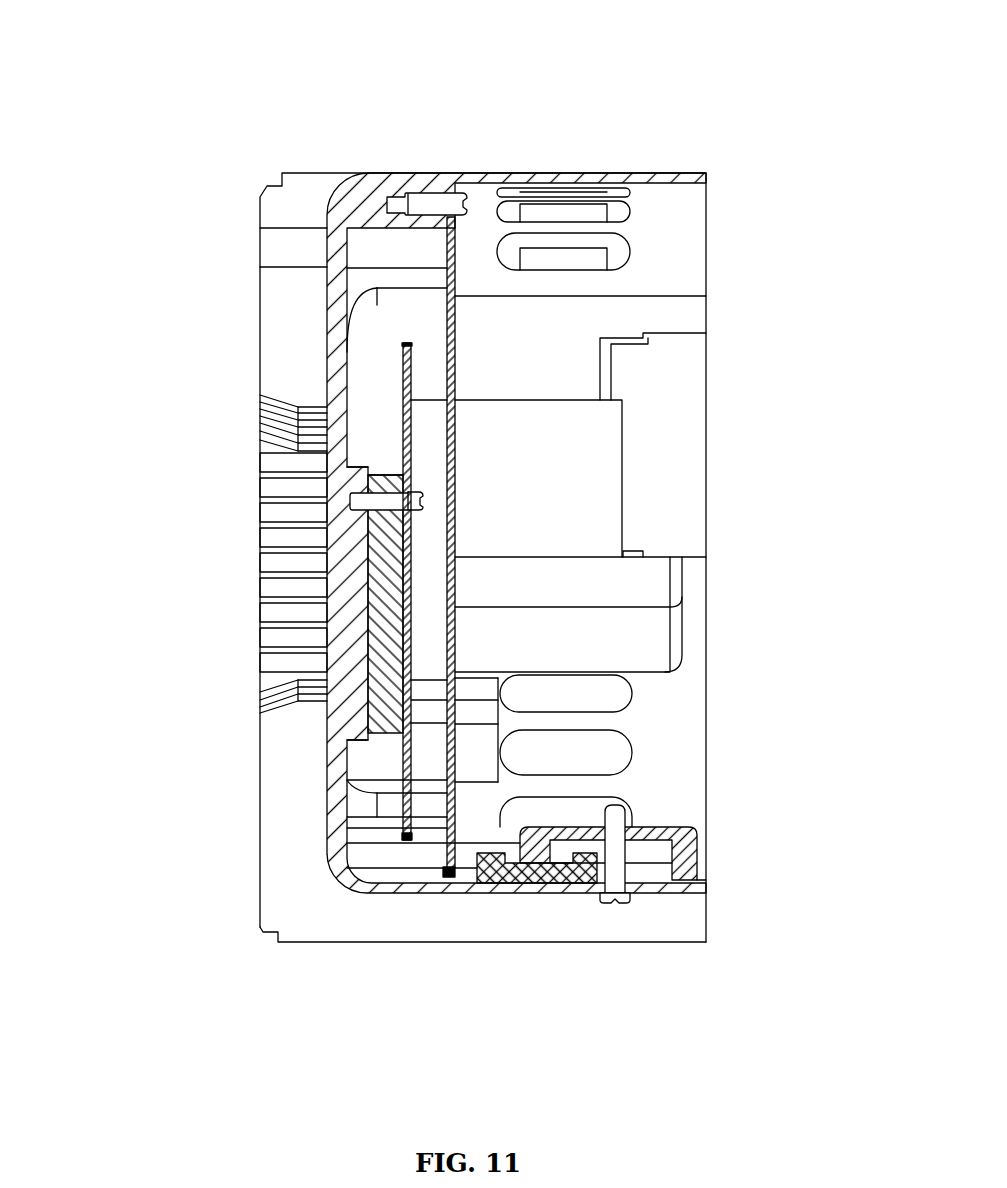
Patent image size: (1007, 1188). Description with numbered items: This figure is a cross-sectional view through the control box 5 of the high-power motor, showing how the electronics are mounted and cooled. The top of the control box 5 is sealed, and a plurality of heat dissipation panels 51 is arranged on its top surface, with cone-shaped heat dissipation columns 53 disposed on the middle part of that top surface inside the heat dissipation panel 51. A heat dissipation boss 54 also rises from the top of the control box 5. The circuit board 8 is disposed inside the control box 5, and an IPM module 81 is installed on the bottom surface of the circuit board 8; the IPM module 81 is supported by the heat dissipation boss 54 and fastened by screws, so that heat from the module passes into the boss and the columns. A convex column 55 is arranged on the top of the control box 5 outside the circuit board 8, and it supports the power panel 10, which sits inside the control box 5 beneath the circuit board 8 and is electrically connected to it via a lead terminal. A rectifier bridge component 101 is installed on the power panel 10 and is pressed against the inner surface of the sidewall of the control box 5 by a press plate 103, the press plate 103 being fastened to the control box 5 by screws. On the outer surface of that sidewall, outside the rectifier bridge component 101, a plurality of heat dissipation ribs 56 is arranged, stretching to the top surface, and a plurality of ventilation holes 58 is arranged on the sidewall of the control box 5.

The control box 5 is at (570, 478).
The heat dissipation panel 51 is at (188, 194).
The cone-shaped heat dissipation column 53 is at (184, 517).
The heat dissipation boss 54 is at (235, 586).
The convex column 55 is at (454, 455).
The heat dissipation rib 56 is at (563, 1006).
The ventilation hole 58 is at (677, 507).
The circuit board 8 is at (242, 527).
The IPM module 81 is at (244, 618).
The power panel 10 is at (260, 577).
The rectifier bridge component 101 is at (575, 971).
The press plate 103 is at (721, 791).